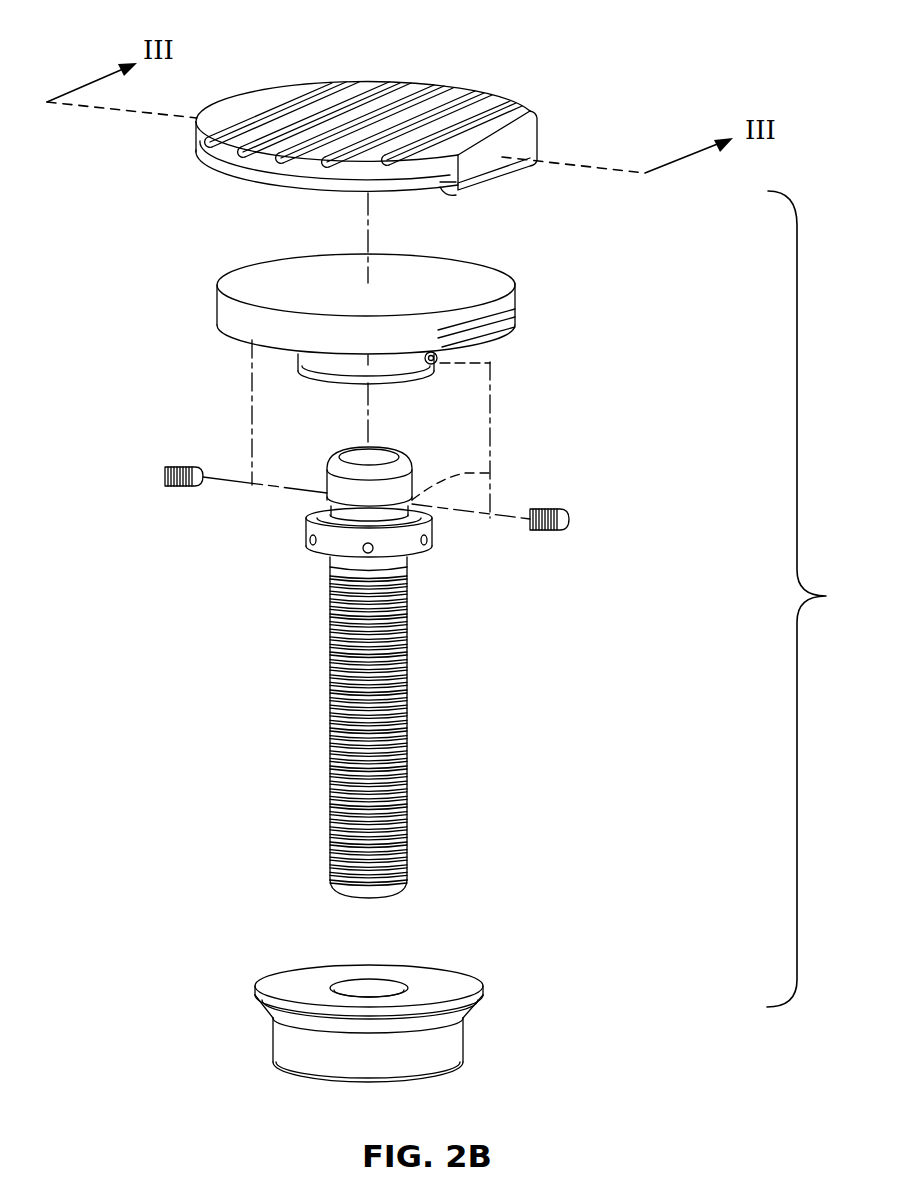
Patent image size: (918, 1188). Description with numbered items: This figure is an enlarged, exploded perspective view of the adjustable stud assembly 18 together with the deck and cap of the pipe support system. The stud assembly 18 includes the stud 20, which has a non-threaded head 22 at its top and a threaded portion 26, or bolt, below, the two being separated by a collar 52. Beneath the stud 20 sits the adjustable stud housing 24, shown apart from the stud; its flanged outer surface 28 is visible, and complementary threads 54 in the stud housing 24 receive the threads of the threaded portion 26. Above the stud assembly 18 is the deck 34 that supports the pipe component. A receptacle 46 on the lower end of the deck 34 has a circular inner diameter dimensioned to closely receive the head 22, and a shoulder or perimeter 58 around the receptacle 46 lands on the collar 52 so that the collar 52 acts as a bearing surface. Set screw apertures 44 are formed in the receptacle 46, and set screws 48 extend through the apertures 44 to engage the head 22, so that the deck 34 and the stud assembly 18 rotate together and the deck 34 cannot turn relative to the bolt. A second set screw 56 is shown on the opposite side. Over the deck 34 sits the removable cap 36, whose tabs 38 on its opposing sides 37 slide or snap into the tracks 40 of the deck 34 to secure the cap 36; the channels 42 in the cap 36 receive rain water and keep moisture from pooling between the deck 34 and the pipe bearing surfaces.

The stud assembly 18 is at (185, 777).
The stud 20 is at (268, 600).
The non-threaded head 22 is at (345, 450).
The stud housing 24 is at (465, 1038).
The threaded portion 26 is at (357, 772).
The flanged outer surface 28 is at (480, 1000).
The deck 34 is at (250, 250).
The removable cap 36 is at (152, 147).
The opposing sides 37 is at (520, 143).
The tabs 38 is at (452, 194).
The tracks 40 is at (528, 341).
The channels 42 is at (488, 100).
The set screw apertures 44 is at (436, 360).
The receptacle 46 is at (315, 365).
The set screws 48 is at (160, 468).
The collar 52 is at (303, 538).
The complementary threads 54 is at (375, 995).
The set screw 56 is at (490, 476).
The shoulder 58 is at (383, 384).